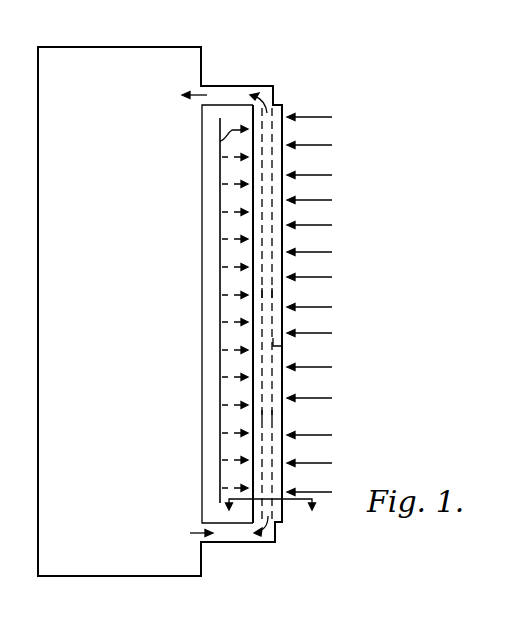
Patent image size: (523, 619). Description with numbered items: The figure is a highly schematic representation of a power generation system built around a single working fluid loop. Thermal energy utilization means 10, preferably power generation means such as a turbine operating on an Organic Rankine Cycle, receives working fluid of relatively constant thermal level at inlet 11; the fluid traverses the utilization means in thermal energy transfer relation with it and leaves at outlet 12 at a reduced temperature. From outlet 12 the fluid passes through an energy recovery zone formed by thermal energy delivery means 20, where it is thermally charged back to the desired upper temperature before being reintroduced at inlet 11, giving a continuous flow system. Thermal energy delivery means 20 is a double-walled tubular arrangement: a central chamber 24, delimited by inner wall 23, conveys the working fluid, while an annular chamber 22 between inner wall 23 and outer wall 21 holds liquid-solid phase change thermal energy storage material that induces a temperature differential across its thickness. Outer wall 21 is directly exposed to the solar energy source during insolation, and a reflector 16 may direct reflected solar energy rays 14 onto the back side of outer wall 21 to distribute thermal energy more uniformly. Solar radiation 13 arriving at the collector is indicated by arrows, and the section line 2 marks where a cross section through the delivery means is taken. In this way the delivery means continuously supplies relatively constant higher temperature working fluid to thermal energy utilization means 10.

The thermal energy utilization means 10 is at (142, 288).
The inlet 11 is at (201, 86).
The outlet 12 is at (202, 543).
The solar radiation 13 is at (287, 117).
The reflected solar energy rays 14 is at (220, 142).
The reflector 16 is at (220, 473).
The thermal energy delivery means 20 is at (280, 72).
The outer wall 21 is at (282, 382).
The annular chamber 22 is at (263, 415).
The inner wall 23 is at (282, 346).
The central chamber 24 is at (263, 293).
The section line 2- 2 is at (271, 513).